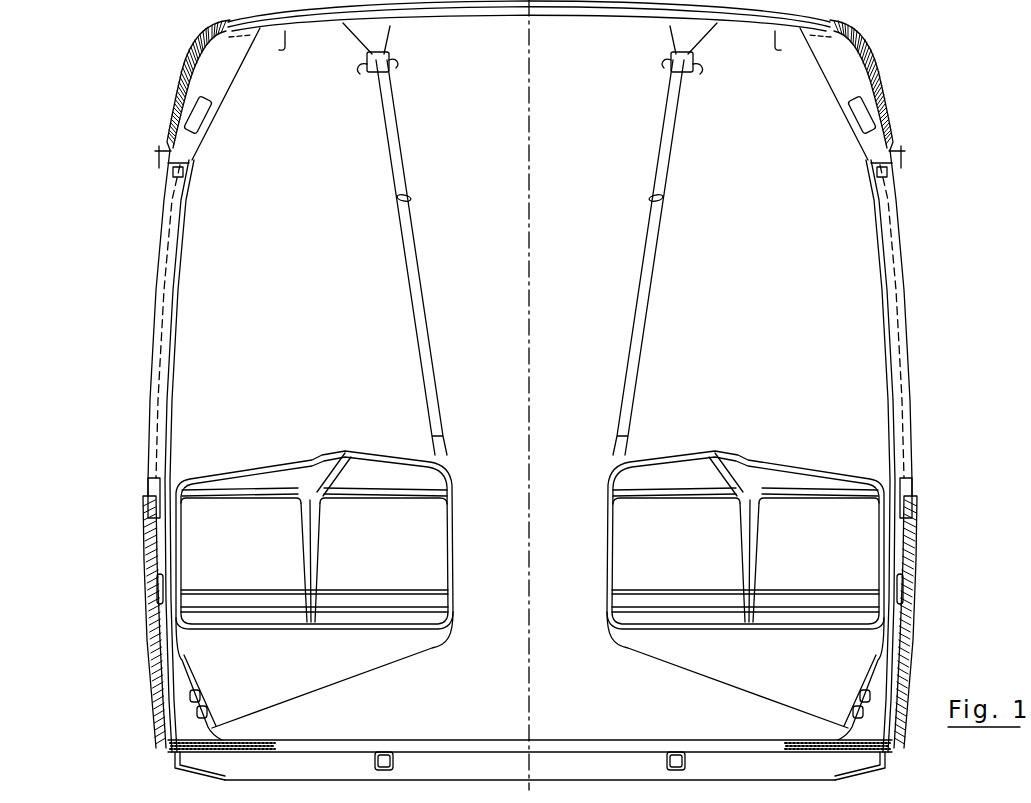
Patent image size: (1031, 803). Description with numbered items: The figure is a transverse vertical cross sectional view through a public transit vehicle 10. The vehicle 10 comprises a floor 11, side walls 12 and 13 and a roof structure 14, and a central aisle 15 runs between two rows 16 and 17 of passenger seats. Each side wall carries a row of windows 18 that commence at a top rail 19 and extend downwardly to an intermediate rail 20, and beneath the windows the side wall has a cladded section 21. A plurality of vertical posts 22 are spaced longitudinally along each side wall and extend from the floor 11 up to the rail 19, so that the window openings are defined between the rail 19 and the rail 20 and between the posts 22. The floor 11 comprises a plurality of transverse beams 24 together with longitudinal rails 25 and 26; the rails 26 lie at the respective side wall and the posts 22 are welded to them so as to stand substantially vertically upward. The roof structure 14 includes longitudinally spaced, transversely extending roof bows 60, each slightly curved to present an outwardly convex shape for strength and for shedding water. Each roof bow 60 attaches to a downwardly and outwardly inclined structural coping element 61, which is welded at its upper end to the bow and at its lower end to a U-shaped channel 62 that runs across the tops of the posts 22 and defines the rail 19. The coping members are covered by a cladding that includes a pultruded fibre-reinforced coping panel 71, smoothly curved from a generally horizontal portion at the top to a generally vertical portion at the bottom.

The vehicle 10 is at (902, 212).
The floor 11 is at (498, 760).
The side wall 12 is at (176, 391).
The side wall 13 is at (872, 296).
The roof structure 14 is at (470, 15).
The central aisle 15 is at (585, 449).
The row of passenger seats 16 is at (302, 447).
The row of passenger seats 17 is at (790, 453).
The windows 18 is at (175, 262).
The top rail 19 is at (190, 160).
The intermediate rail 20 is at (160, 503).
The cladded section 21 is at (924, 562).
The vertical posts 22 is at (162, 564).
The transverse beams 24 is at (338, 754).
The longitudinal rails 25 is at (395, 763).
The side rails 26 is at (174, 766).
The roof bows 60 is at (422, 14).
The coping element 61 is at (226, 78).
The U-shaped channel 62 is at (194, 148).
The coping panel 71 is at (188, 52).